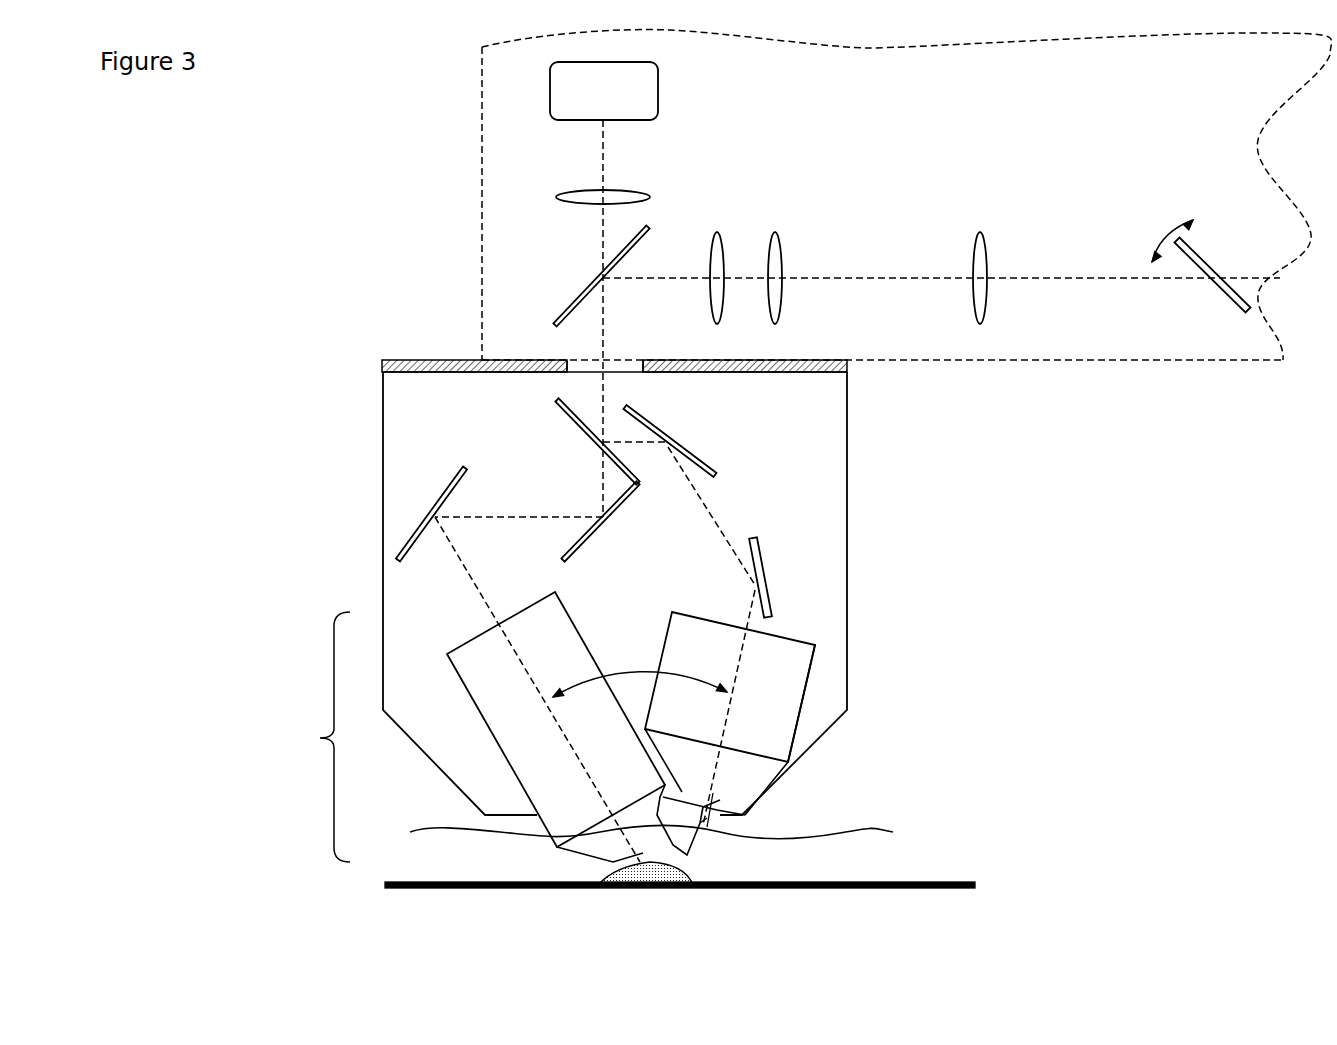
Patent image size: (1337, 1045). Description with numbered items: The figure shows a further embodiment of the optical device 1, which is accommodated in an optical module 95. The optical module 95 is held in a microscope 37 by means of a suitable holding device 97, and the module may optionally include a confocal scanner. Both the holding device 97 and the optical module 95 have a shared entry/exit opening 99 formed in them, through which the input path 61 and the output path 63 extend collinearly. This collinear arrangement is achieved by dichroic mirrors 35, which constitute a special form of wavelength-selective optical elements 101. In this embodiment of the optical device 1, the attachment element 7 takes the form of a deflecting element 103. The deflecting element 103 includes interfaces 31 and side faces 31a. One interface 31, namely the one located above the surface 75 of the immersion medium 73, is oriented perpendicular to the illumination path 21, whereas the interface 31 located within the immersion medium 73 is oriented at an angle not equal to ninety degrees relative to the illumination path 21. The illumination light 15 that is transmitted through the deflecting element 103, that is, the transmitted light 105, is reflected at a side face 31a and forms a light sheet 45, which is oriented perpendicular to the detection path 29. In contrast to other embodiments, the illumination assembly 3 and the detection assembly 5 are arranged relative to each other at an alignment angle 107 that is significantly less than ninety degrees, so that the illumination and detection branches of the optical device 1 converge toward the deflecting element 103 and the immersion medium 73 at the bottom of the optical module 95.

The optical device 1 is at (312, 738).
The illumination assembly 3 is at (808, 685).
The detection assembly 5 is at (482, 713).
The attachment element 7 is at (818, 787).
The illumination light 15 is at (748, 622).
The illumination path 21 is at (705, 850).
The detection path 29 is at (645, 850).
The interfaces 31 is at (713, 793).
The side faces 31a is at (707, 827).
The dichroic mirrors 35 is at (504, 355).
The microscope 37 is at (1162, 127).
The light sheet 45 is at (645, 870).
The input path 61 is at (875, 278).
The output path 63 is at (605, 153).
The immersion medium 73 is at (783, 857).
The surface of immersion medium 75 is at (893, 832).
The optical module 95 is at (400, 590).
The holding device 97 is at (450, 360).
The entry/exit opening 99 is at (583, 363).
The wavelength-selective optical elements 101 is at (563, 307).
The deflecting element 103 is at (707, 818).
The transmitted light 105 is at (707, 828).
The alignment angle 107 is at (627, 672).